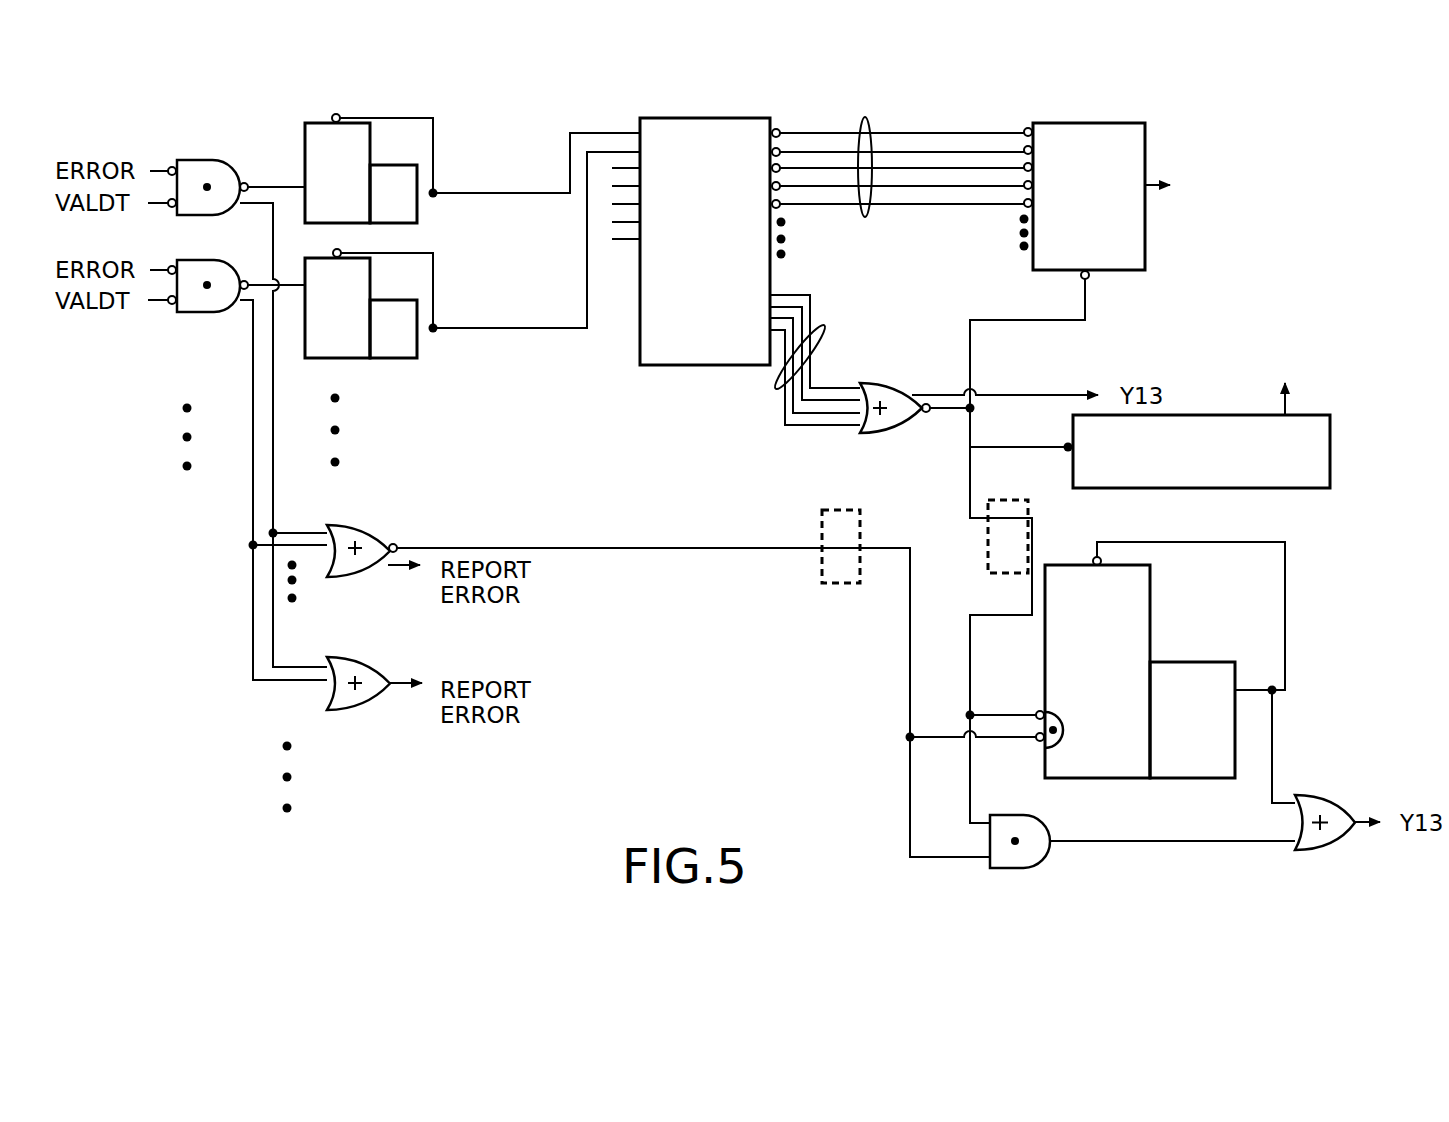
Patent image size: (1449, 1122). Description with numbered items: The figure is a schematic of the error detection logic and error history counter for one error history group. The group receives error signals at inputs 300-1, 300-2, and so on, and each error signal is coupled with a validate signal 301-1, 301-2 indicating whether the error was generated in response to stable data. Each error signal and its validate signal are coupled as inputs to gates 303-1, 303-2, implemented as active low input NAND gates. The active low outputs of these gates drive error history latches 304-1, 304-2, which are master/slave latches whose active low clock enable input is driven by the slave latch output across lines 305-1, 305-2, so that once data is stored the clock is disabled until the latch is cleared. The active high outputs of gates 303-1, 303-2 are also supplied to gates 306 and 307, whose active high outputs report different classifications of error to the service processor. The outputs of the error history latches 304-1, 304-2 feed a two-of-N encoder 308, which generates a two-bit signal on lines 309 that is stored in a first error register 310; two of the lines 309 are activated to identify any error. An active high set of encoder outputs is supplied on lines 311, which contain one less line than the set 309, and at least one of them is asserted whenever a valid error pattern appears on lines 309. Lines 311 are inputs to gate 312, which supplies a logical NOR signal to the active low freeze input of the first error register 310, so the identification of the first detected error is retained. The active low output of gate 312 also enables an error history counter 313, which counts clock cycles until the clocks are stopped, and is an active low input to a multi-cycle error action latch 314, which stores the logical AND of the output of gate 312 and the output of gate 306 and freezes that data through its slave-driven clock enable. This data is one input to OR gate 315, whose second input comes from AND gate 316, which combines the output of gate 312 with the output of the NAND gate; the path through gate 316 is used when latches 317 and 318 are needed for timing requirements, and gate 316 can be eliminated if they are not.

The error signal input 300-1 is at (162, 170).
The error signal input 300-2 is at (152, 270).
The validate signal 301-1 is at (157, 204).
The validate signal 301-2 is at (163, 302).
The gate 303-1 is at (213, 168).
The gate 303-2 is at (195, 312).
The error history latch 304-1 is at (312, 133).
The error history latch 304-2 is at (328, 348).
The line 305-1 is at (385, 118).
The line 305-2 is at (433, 300).
The gate 306 is at (345, 526).
The gate 307 is at (360, 658).
The 2-of-N encoder 308 is at (672, 126).
The lines 309 is at (866, 118).
The first error register 310 is at (1092, 128).
The lines 311 is at (822, 332).
The gate 312 is at (880, 386).
The error history counter 313 is at (1243, 488).
The multi-cycle error action latch 314 is at (1150, 620).
The OR gate 315 is at (1313, 795).
The AND gate 316 is at (1022, 816).
The latch 317 is at (850, 580).
The latch 318 is at (997, 501).